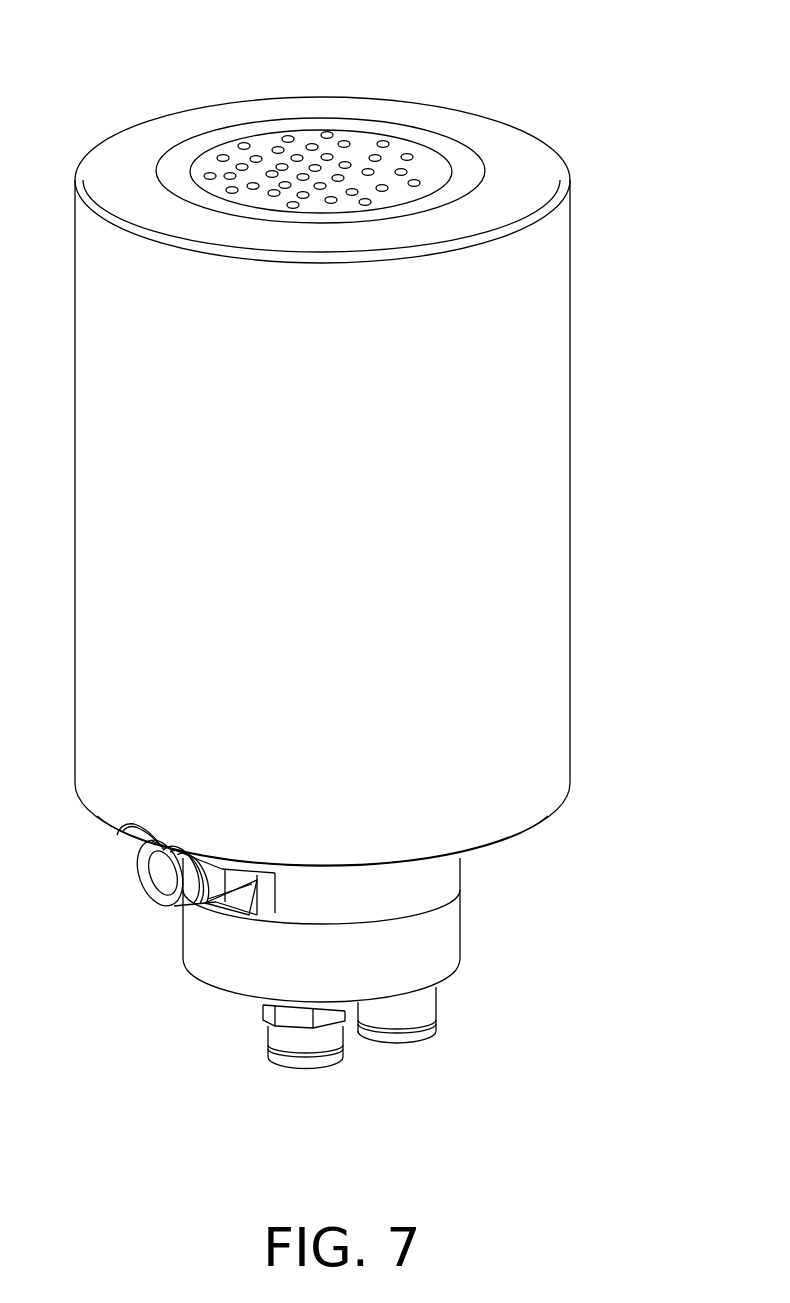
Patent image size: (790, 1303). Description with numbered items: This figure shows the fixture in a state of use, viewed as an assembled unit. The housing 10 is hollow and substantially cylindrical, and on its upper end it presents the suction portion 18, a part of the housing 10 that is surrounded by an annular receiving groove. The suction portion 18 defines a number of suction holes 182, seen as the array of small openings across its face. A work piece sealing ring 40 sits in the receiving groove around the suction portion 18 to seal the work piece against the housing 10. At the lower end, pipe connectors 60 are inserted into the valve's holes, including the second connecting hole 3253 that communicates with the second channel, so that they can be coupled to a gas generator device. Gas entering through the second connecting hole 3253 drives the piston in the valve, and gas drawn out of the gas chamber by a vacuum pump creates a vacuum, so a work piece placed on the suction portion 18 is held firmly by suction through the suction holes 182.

The housing 10 is at (528, 345).
The suction portion 18 is at (235, 157).
The suction holes 182 is at (312, 146).
The work piece sealing ring 40 is at (463, 170).
The second connecting hole 3253 is at (252, 882).
The pipe connectors 60 is at (420, 1013).